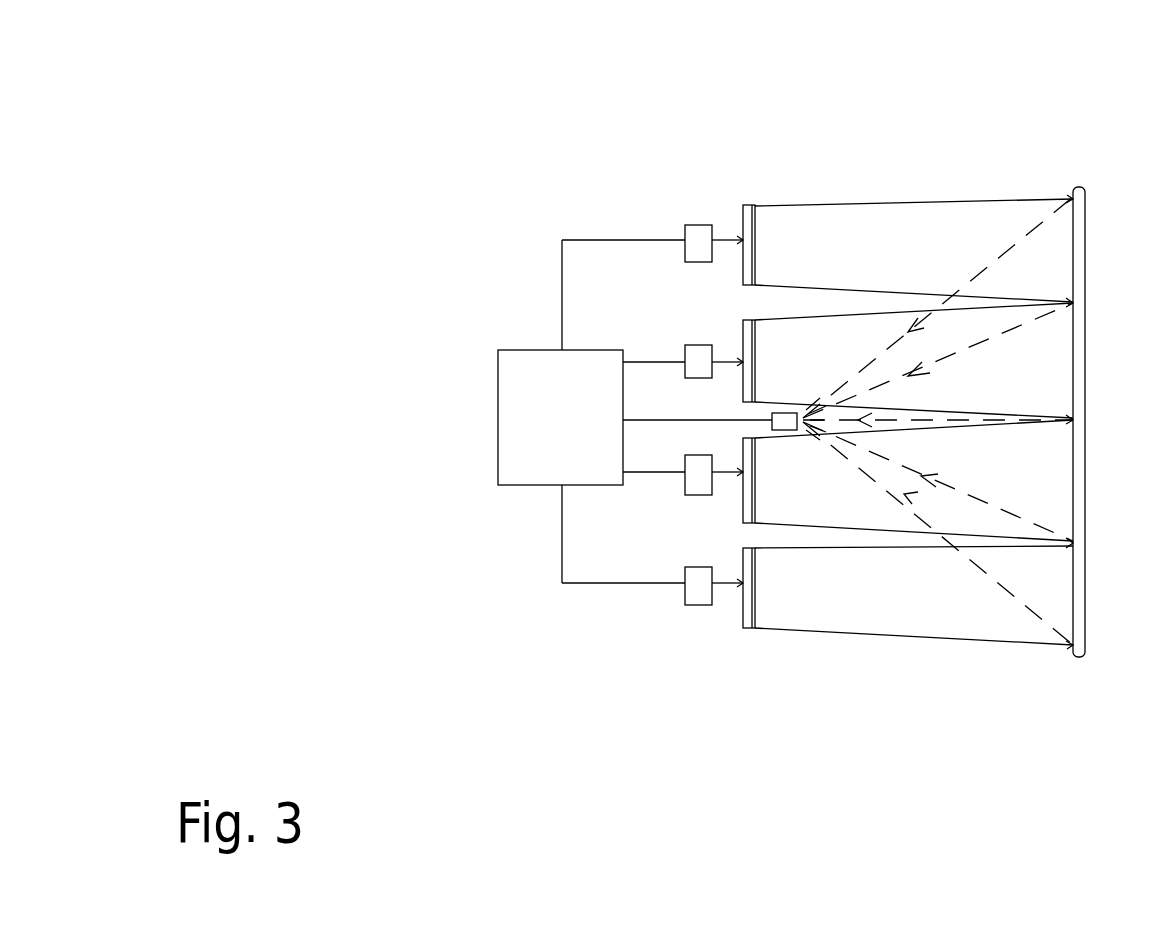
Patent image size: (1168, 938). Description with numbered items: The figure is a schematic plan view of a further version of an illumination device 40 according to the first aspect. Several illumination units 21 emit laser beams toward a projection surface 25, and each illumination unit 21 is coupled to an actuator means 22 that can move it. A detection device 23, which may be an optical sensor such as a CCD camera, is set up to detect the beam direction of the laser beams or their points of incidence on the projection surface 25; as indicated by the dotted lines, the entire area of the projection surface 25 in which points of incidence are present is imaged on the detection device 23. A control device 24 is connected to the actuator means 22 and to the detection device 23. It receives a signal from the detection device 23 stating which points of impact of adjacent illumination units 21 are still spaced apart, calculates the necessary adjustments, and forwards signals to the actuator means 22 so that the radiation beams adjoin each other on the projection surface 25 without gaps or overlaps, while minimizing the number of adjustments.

The illumination device 40 is at (580, 55).
The illumination unit 21 is at (748, 208).
The actuator means 22 is at (697, 232).
The detection device 23 is at (785, 430).
The control device 24 is at (568, 440).
The projection surface 25 is at (1082, 238).